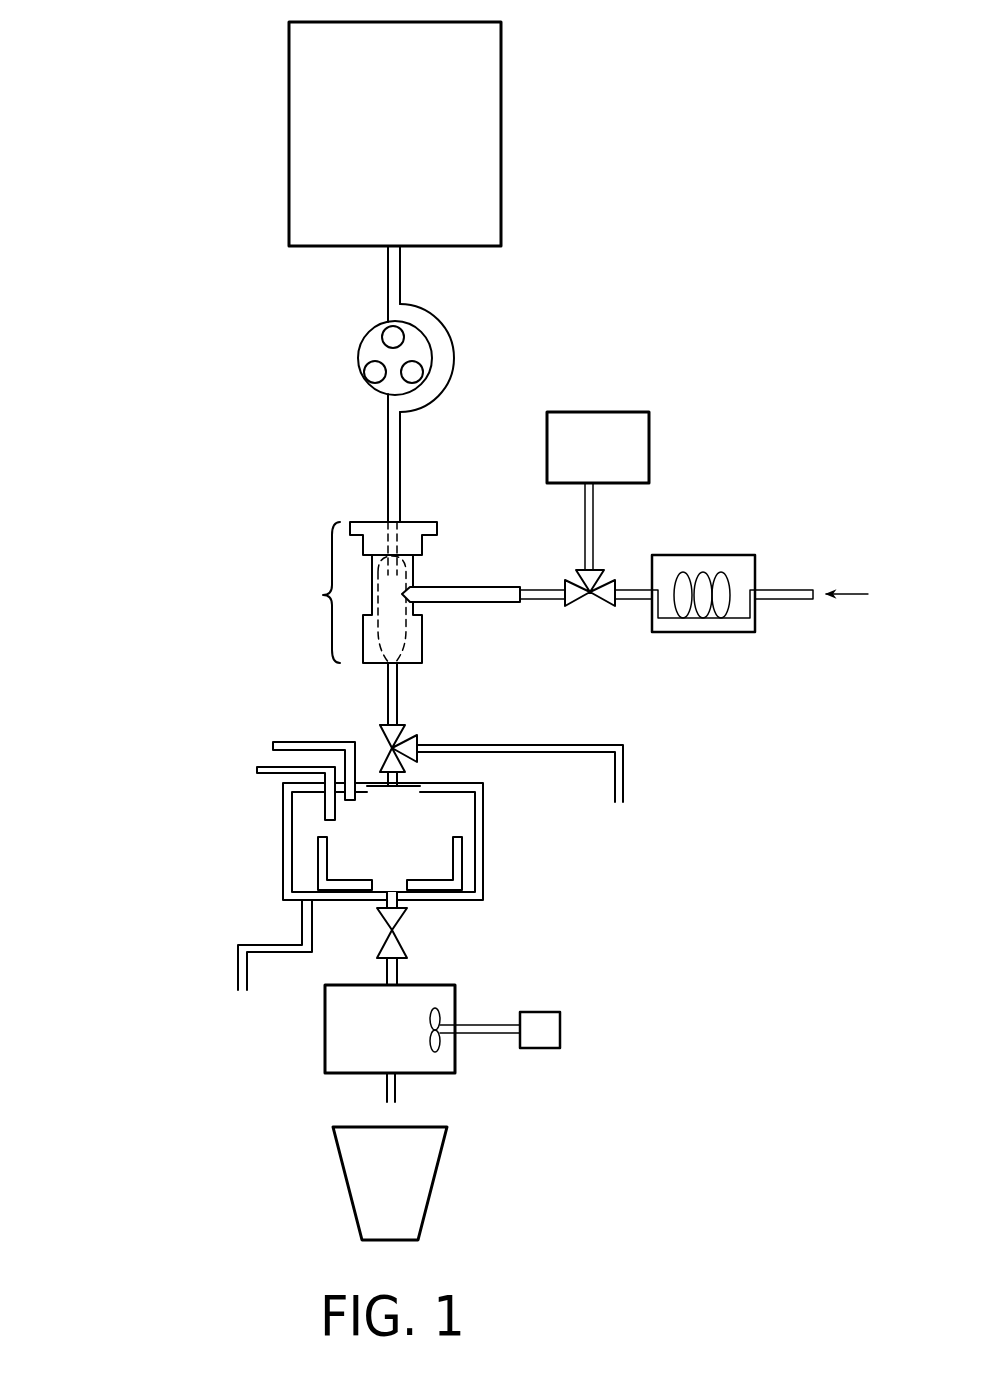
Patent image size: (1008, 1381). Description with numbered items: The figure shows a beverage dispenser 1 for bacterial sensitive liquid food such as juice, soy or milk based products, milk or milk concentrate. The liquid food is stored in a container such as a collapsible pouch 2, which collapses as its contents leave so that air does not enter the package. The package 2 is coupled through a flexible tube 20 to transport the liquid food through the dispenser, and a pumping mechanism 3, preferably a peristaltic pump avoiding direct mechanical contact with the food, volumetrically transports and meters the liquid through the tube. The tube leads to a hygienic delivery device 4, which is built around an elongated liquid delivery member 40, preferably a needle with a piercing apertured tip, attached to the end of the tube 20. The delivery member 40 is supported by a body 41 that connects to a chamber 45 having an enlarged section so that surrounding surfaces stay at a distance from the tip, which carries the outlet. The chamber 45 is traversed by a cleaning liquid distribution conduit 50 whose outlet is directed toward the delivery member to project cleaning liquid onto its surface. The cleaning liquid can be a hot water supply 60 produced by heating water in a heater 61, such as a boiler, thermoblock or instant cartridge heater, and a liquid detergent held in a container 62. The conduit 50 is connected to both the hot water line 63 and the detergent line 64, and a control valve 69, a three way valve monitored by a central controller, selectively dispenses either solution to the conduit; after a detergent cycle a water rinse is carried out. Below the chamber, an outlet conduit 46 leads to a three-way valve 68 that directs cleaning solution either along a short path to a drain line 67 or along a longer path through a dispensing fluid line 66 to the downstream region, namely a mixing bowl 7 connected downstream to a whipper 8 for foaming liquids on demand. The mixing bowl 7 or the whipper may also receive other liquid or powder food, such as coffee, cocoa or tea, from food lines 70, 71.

The beverage dispenser 1 is at (208, 352).
The collapsible pouch 2 is at (515, 143).
The pumping mechanism 3 is at (346, 385).
The hygienic delivery device 4 is at (308, 595).
The mixing bowl 7 is at (502, 847).
The whipper 8 is at (458, 990).
The flexible tube 20 is at (460, 351).
The elongated liquid delivery member 40 is at (395, 580).
The body 41 is at (437, 525).
The chamber 45 is at (415, 640).
The outlet conduit 46 is at (400, 677).
The cleaning liquid distribution conduit 50 is at (515, 602).
The hot water supply 60 is at (806, 557).
The heater 61 is at (710, 555).
The container 62 is at (650, 416).
The hot water line 63 is at (630, 604).
The detergent line 64 is at (583, 555).
The dispensing fluid line 66 is at (400, 718).
The drain line 67 is at (605, 745).
The three-way valve 68 is at (385, 735).
The control valve 69 is at (585, 610).
The food line 70 is at (290, 740).
The food line 71 is at (262, 765).